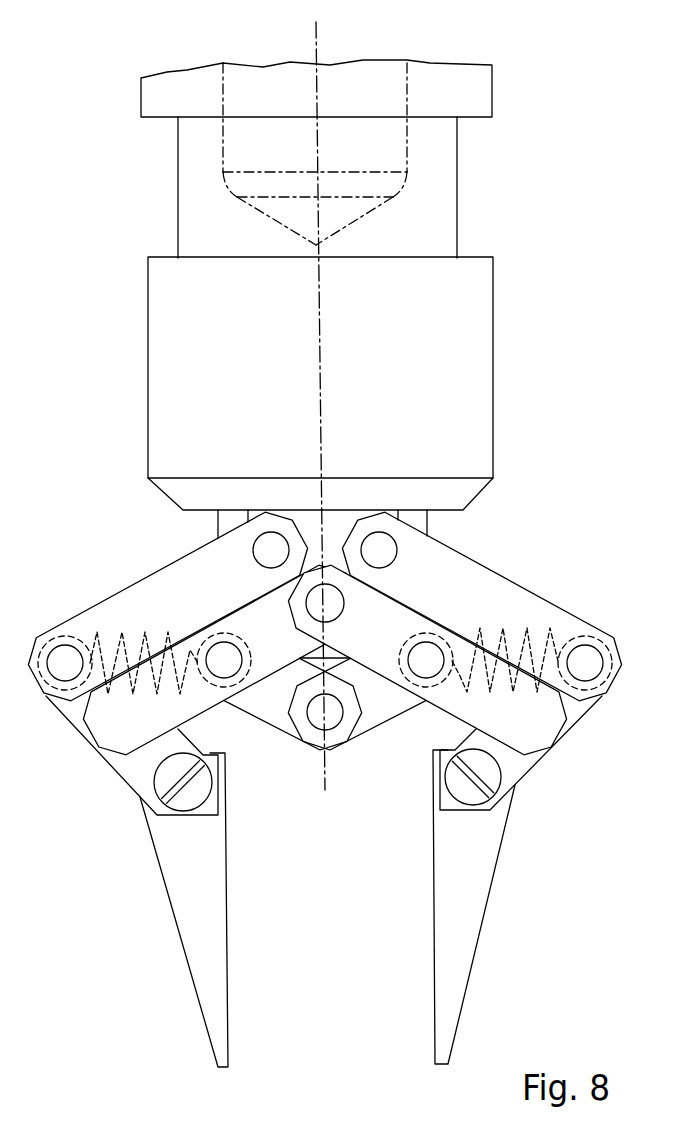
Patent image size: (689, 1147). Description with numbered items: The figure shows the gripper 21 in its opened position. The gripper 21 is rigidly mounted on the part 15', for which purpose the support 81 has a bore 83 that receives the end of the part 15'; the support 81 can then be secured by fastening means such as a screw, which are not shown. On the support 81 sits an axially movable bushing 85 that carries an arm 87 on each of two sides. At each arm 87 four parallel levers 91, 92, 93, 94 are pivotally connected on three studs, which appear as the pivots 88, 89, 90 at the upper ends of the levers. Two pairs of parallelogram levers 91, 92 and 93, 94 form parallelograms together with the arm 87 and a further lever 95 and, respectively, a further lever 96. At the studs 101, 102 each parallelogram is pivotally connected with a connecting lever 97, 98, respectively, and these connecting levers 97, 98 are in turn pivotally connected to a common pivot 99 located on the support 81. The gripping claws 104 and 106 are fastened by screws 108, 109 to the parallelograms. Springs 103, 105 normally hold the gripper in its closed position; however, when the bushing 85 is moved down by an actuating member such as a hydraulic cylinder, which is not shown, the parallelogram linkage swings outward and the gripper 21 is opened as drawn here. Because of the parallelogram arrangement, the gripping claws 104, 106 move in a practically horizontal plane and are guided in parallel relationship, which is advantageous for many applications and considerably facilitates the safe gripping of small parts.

The support 81 is at (473, 95).
The bore 83 is at (387, 130).
The part 15' is at (383, 154).
The bushing 85 is at (477, 363).
The gripper 21 is at (500, 527).
The arm 87 is at (250, 519).
The pivot 88 is at (260, 553).
The pivot 89 is at (330, 612).
The pivot 90 is at (382, 558).
The lever 91 is at (145, 603).
The lever 92 is at (97, 747).
The lever 93 is at (543, 733).
The lever 94 is at (563, 618).
The further lever 95 is at (137, 768).
The further lever 96 is at (518, 767).
The connecting lever 97 is at (277, 715).
The connecting lever 98 is at (358, 720).
The common pivot 99 is at (320, 725).
The stud 101 is at (212, 673).
The stud 102 is at (426, 673).
The spring 103 is at (90, 637).
The gripping claw 104 is at (200, 970).
The spring 105 is at (527, 633).
The gripping claw 106 is at (453, 1012).
The screw 108 is at (187, 798).
The screw 109 is at (473, 787).